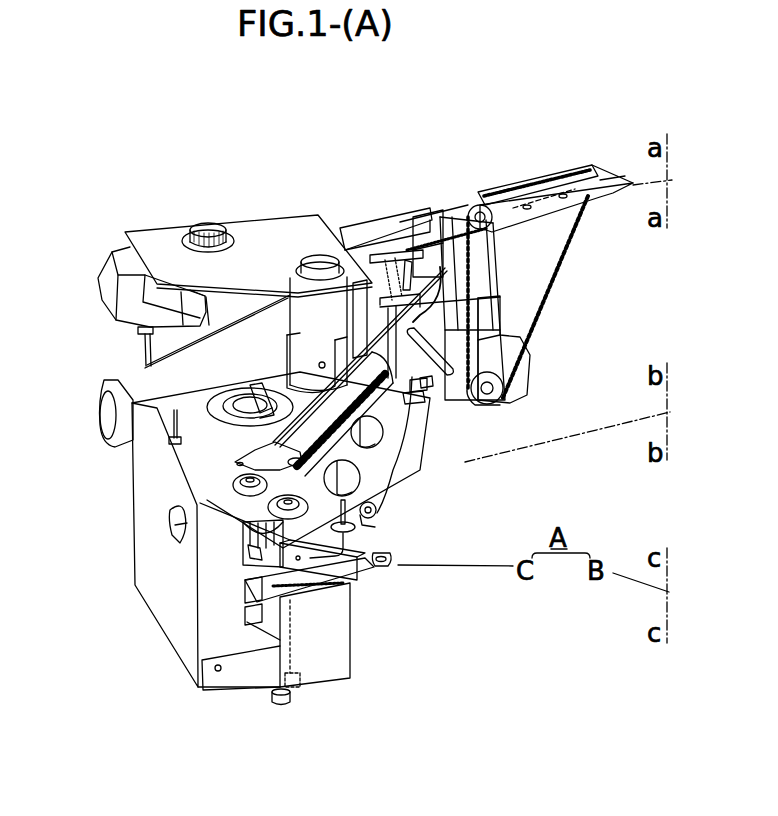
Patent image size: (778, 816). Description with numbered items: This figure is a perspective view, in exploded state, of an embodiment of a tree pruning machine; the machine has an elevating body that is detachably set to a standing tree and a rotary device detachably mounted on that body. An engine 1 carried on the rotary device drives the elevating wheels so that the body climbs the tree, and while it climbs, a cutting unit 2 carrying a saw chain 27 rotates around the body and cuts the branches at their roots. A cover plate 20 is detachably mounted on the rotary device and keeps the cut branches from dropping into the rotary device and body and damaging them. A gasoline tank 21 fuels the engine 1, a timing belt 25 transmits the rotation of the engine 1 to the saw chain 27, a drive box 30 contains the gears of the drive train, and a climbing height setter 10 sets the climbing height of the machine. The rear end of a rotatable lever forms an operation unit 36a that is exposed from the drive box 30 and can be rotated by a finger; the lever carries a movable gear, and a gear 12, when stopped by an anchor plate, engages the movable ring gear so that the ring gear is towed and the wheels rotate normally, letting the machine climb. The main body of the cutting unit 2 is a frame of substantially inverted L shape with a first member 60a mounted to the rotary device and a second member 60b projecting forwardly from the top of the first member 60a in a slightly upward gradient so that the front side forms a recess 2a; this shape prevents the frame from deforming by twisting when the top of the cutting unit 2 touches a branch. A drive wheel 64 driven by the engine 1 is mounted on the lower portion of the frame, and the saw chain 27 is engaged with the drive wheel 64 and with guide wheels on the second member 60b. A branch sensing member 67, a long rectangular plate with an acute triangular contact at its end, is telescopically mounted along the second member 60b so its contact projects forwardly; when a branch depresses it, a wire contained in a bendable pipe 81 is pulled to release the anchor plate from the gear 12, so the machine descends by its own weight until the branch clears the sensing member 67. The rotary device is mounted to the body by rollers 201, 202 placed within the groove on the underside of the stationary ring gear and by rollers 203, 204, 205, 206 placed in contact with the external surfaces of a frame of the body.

The engine 1 is at (103, 388).
The cutting unit 2 is at (531, 273).
The recess 2a is at (542, 233).
The climbing height setter 10 is at (200, 408).
The gear 12 is at (253, 542).
The cover plate 20 is at (283, 216).
The gasoline tank 21 is at (105, 262).
The timing belt 25 is at (340, 440).
The saw chain 27 is at (546, 300).
The drive box 30 is at (163, 615).
The operation unit 36a is at (170, 532).
The first member 60a is at (481, 311).
The second member 60b is at (490, 192).
The drive wheel 64 is at (494, 400).
The branch sensing member 67 is at (580, 188).
The bendable pipe 81 is at (426, 385).
The roller 201 is at (387, 568).
The roller 202 is at (428, 404).
The roller 203 is at (296, 690).
The roller 204 is at (286, 705).
The roller 205 is at (376, 513).
The roller 206 is at (377, 525).